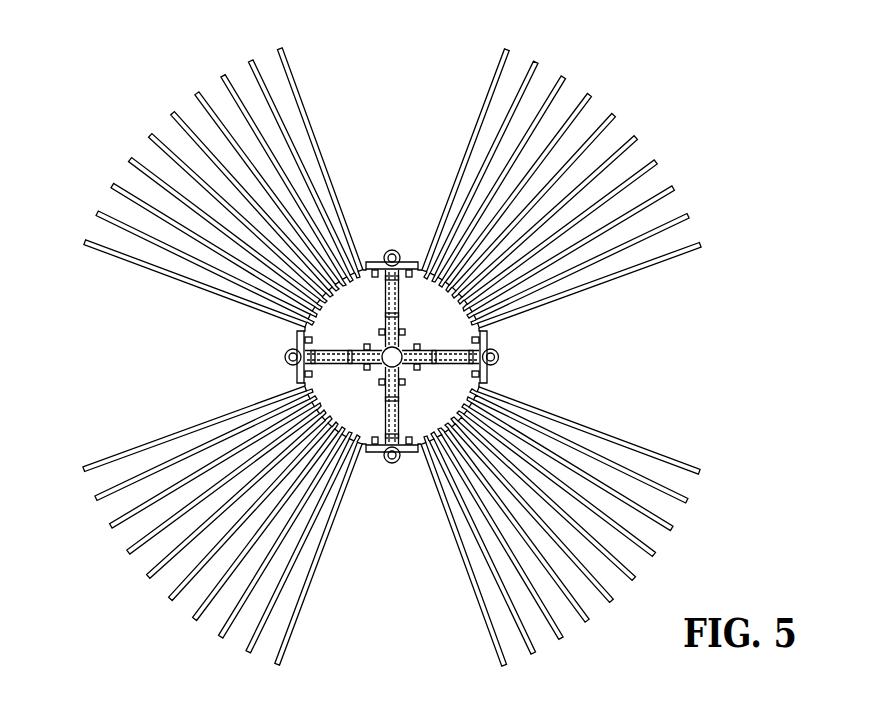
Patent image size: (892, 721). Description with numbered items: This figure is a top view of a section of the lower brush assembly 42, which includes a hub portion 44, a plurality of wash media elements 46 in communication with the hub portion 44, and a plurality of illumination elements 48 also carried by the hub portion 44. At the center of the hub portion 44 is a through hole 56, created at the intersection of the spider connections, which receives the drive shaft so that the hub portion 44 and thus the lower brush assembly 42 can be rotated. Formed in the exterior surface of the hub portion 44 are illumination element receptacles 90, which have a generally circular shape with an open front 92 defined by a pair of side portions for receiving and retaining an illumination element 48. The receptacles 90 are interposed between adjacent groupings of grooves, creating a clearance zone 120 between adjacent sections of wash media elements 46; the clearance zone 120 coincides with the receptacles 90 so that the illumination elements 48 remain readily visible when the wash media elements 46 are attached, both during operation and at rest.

The lower brush assembly 42 is at (392, 355).
The hub portion 44 is at (372, 261).
The wash media elements 46 is at (533, 653).
The illumination elements 48 is at (394, 250).
The through hole 56 is at (403, 347).
The illumination element receptacles 90 is at (413, 262).
The open front 92 is at (402, 255).
The clearance zone 120 is at (397, 95).